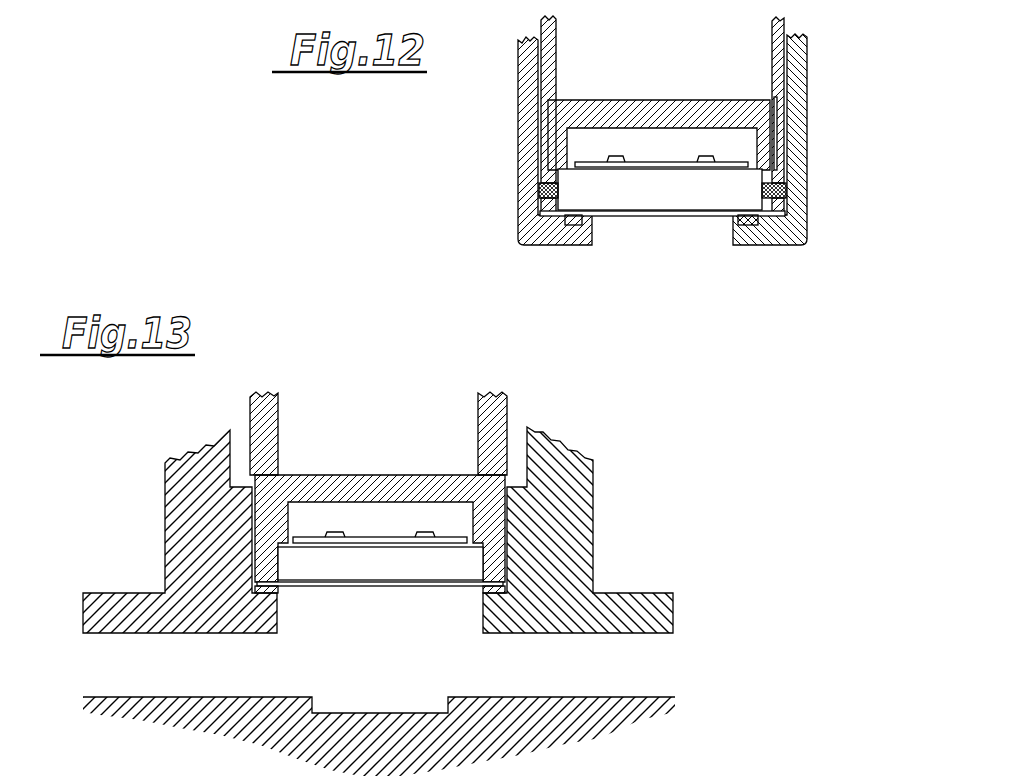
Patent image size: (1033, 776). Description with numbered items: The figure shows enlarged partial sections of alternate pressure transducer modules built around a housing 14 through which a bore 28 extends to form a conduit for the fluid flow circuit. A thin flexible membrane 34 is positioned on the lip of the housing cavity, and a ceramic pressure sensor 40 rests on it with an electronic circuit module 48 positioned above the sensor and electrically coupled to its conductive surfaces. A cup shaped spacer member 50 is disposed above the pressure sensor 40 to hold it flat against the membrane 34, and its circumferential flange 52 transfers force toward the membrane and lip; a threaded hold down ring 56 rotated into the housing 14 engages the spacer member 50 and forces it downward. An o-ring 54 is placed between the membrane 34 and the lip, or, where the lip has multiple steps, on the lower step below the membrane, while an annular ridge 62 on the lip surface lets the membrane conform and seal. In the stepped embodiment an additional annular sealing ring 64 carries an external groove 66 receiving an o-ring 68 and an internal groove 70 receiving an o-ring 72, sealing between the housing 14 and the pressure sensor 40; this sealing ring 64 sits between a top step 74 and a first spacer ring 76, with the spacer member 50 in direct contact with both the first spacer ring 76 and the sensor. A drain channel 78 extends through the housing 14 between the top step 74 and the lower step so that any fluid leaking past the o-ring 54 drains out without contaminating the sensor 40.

In FIG. 13, the housing 14 is at (165, 505).
In FIG. 13, the bore 28 is at (108, 635).
In FIG. 12, the flexible membrane 34 is at (643, 216).
In FIG. 13, the flexible membrane 34 is at (360, 586).
In FIG. 12, the pressure sensor 40 is at (654, 199).
In FIG. 13, the pressure sensor 40 is at (407, 574).
In FIG. 12, the electronic circuit module 48 is at (733, 163).
In FIG. 13, the electronic circuit module 48 is at (385, 538).
In FIG. 12, the spacer member 50 is at (670, 100).
In FIG. 13, the spacer member 50 is at (372, 475).
In FIG. 13, the circumferential flange 52 is at (487, 512).
In FIG. 12, the o-ring 54 is at (580, 221).
In FIG. 13, the o-ring 54 is at (270, 590).
In FIG. 13, the threaded hold down ring 56 is at (280, 397).
In FIG. 12, the annular ridge 62 is at (740, 222).
In FIG. 12, the annular sealing ring 64 is at (777, 190).
In FIG. 12, the external groove 66 is at (786, 200).
In FIG. 12, the o-ring 68 is at (551, 185).
In FIG. 12, the internal groove 70 is at (766, 185).
In FIG. 12, the o-ring 72 is at (541, 186).
In FIG. 12, the top step 74 is at (776, 214).
In FIG. 12, the first spacer ring 76 is at (778, 103).
In FIG. 12, the drain channel 78 is at (803, 213).